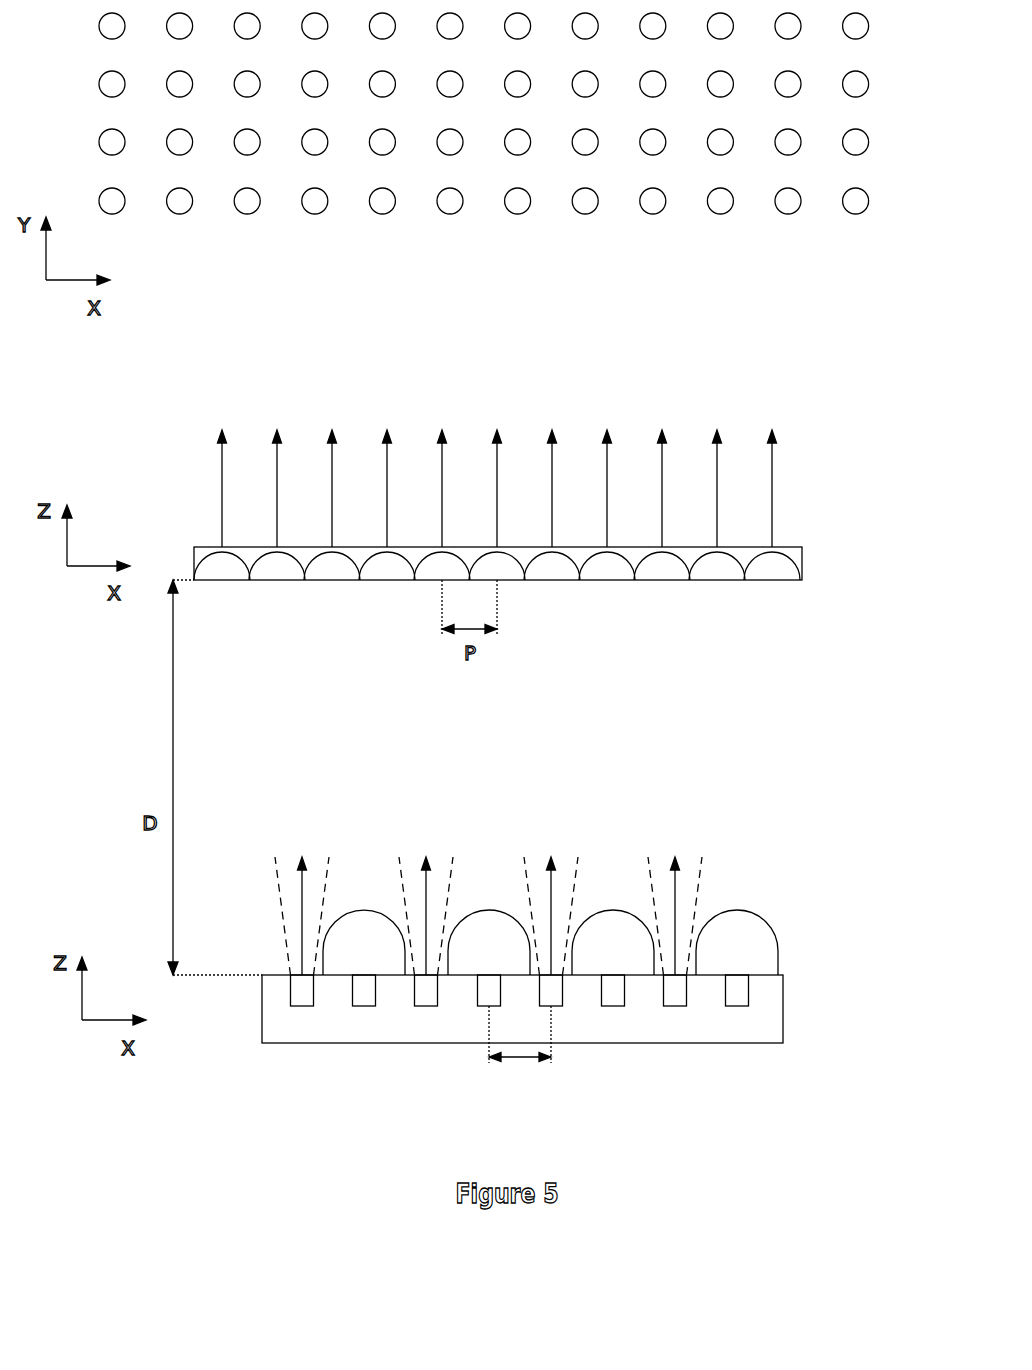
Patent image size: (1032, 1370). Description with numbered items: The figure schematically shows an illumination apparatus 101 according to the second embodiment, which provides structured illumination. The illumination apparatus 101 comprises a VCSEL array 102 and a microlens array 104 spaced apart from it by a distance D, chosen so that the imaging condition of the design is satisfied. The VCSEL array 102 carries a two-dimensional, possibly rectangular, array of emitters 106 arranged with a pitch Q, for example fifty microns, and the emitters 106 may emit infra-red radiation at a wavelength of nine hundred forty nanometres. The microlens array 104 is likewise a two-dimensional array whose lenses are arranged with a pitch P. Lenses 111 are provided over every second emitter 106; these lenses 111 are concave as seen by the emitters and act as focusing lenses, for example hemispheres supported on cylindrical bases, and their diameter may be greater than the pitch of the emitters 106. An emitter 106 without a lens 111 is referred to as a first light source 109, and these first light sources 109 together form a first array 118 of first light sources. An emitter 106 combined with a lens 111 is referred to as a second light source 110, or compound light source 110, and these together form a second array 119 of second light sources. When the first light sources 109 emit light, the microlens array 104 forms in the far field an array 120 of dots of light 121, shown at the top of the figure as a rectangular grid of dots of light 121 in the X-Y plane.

The illumination apparatus 101 is at (561, 989).
The VCSEL array 102 is at (753, 1021).
The microlens array 104 is at (795, 555).
The emitters 106 is at (484, 992).
The first light source 109 is at (298, 982).
The second light source 110 is at (747, 982).
The lenses 111 is at (360, 928).
The first array of first light sources 118 is at (430, 993).
The second array of second light sources 119 is at (742, 992).
The array of dots of light 120 is at (499, 161).
The dots of light 121 is at (583, 202).